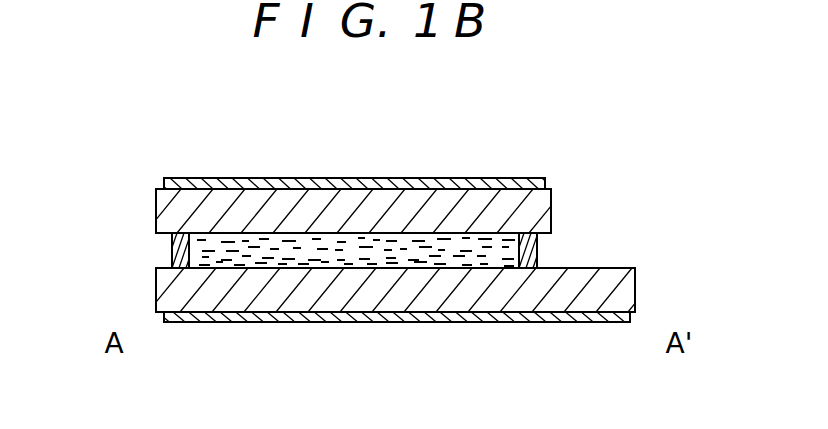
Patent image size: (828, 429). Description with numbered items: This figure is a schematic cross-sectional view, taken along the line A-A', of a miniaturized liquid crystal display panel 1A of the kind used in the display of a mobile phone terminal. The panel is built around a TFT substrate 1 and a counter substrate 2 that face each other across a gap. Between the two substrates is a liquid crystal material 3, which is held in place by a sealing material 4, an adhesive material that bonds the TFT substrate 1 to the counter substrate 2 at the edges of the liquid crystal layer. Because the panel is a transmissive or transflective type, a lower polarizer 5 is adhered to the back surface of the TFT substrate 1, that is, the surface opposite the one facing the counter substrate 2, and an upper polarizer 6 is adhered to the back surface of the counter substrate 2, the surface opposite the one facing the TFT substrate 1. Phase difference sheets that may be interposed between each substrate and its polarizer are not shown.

The TFT substrate 1 is at (265, 298).
The counter substrate 2 is at (302, 205).
The liquid crystal material 3 is at (214, 238).
The sealing material 4 is at (172, 256).
The lower polarizer 5 is at (447, 320).
The upper polarizer 6 is at (466, 182).
The liquid crystal panel 1A is at (640, 291).